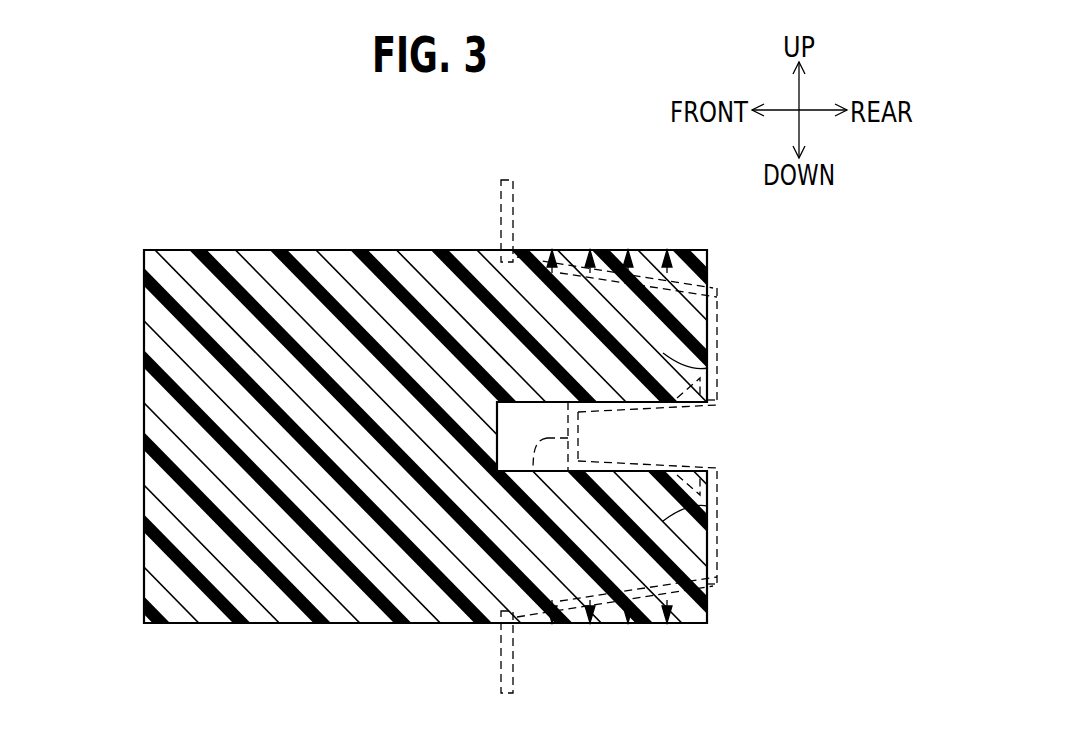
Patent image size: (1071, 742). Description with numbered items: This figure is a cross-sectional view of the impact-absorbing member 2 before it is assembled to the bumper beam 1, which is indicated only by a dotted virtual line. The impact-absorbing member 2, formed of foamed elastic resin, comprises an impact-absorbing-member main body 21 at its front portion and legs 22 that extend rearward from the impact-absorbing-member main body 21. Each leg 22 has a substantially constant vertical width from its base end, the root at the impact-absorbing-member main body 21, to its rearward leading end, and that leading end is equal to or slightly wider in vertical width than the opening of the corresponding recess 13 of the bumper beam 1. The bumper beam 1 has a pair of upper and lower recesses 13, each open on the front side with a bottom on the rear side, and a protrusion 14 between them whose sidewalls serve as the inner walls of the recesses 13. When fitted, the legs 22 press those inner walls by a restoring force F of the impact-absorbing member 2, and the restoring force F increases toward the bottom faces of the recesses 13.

The bumper beam 1 is at (505, 180).
The impact-absorbing member 2 is at (143, 463).
The impact-absorbing-member main body 21 is at (328, 282).
The legs 22 is at (708, 368).
The recesses 13 is at (712, 403).
The protrusion 14 is at (533, 472).
The restoring force F is at (667, 262).